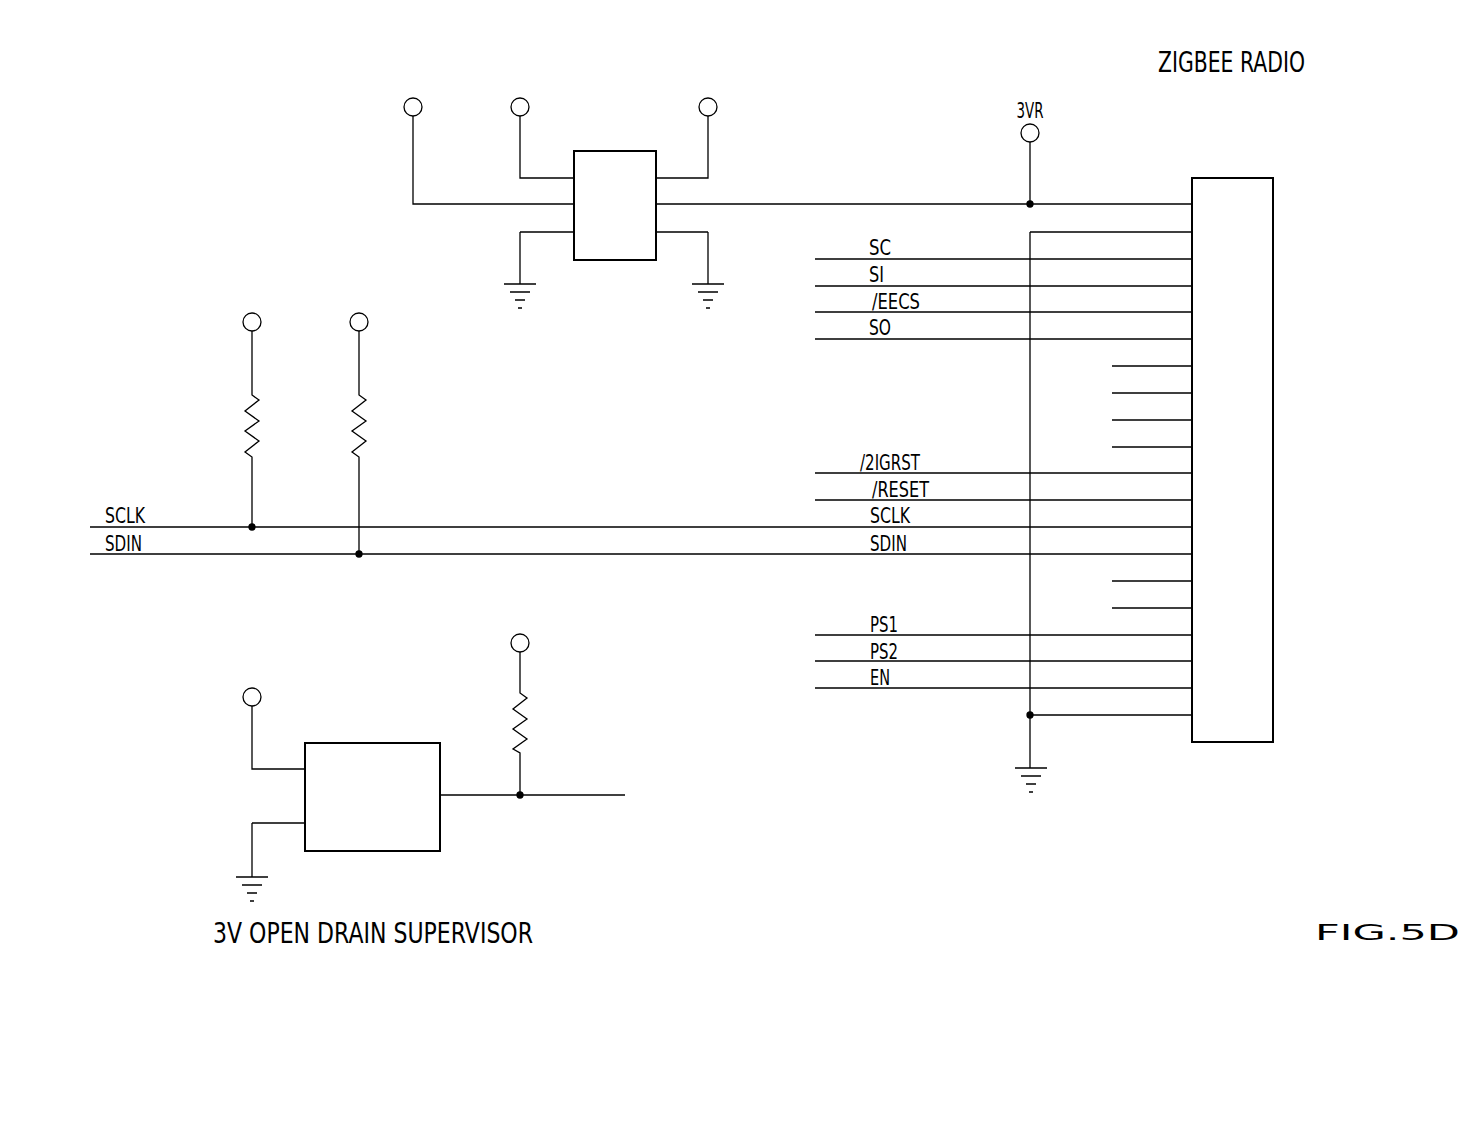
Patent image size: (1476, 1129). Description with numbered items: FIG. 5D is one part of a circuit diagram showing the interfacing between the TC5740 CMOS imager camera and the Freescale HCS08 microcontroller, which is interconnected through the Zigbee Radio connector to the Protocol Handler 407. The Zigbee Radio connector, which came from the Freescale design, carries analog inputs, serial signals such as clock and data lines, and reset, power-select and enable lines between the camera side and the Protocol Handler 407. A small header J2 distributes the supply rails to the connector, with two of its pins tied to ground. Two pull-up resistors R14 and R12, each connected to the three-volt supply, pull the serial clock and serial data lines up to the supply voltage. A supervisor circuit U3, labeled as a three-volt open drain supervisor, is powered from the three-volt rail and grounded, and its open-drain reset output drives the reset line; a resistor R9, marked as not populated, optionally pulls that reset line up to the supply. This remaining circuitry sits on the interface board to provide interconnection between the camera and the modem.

The Protocol Handler 407 is at (1129, 471).
The header HDR2X3 J2 is at (562, 190).
The open drain supervisor MCP120-300 U3 is at (430, 781).
The resistor 2K2 R14 is at (267, 408).
The resistor 2K2 R12 is at (374, 421).
The resistor DNP R9 is at (536, 701).